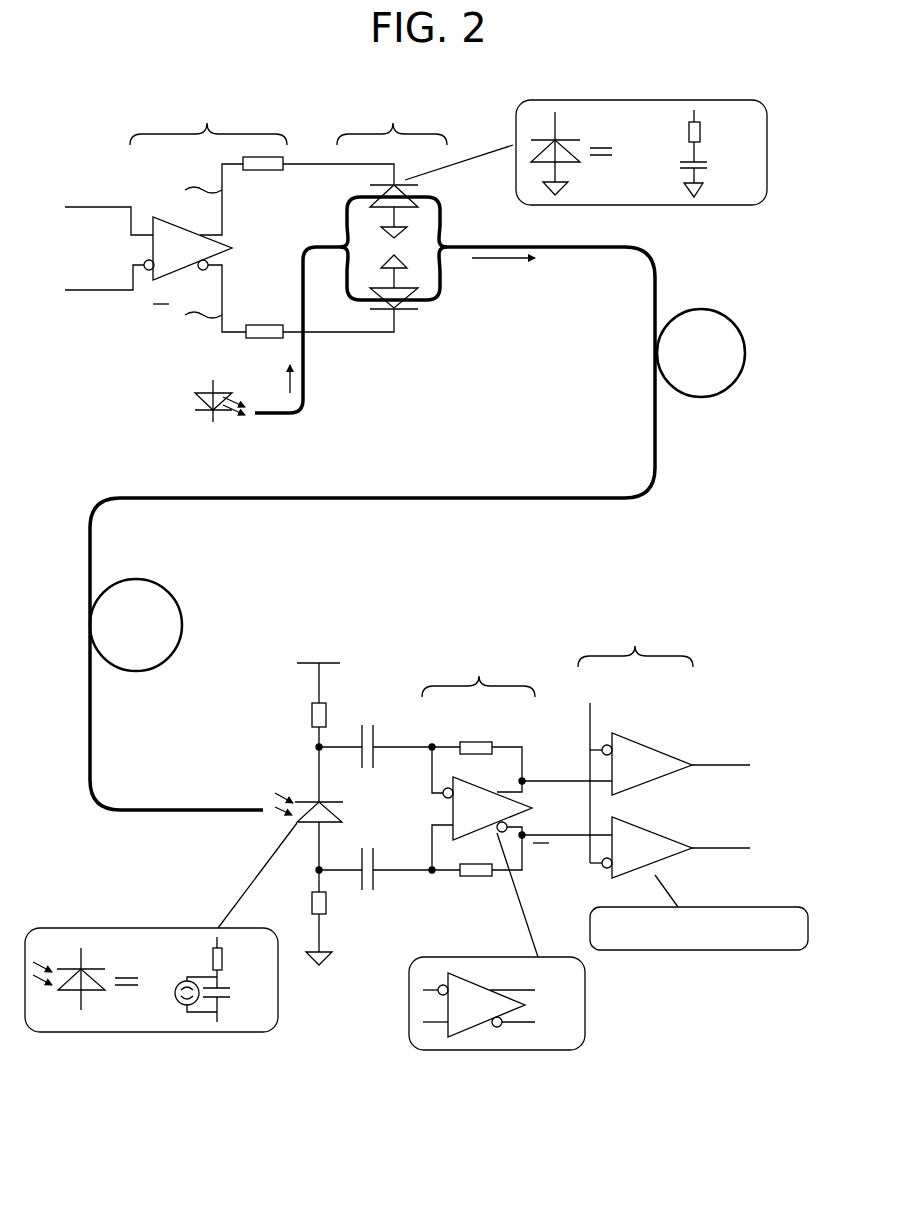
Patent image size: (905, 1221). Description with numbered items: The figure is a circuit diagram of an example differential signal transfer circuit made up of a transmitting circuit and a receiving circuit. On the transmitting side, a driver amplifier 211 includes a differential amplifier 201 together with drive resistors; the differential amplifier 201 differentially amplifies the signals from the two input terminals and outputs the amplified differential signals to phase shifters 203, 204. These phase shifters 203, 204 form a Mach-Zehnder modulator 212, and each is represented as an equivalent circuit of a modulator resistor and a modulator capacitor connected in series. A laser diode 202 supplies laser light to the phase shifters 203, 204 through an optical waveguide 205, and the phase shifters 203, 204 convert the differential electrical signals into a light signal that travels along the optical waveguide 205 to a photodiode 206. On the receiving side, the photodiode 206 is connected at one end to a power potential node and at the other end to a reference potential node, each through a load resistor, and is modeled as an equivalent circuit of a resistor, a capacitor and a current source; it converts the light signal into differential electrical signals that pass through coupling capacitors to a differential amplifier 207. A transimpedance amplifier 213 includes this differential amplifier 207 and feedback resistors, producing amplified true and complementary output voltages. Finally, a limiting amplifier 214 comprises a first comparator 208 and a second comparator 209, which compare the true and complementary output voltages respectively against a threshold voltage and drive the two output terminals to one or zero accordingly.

The differential amplifier 201 is at (153, 250).
The laser diode 202 is at (197, 393).
The phase shifter 203 is at (399, 180).
The phase shifter 204 is at (410, 312).
The optical waveguide 205 is at (440, 497).
The photodiode 206 is at (340, 807).
The differential amplifier 207 is at (453, 811).
The first comparator 208 is at (643, 738).
The second comparator 209 is at (643, 821).
The driver amplifier 211 is at (209, 216).
The Mach-Zehnder modulator 212 is at (395, 253).
The transimpedance amplifier 213 is at (443, 785).
The limiting amplifier 214 is at (635, 743).